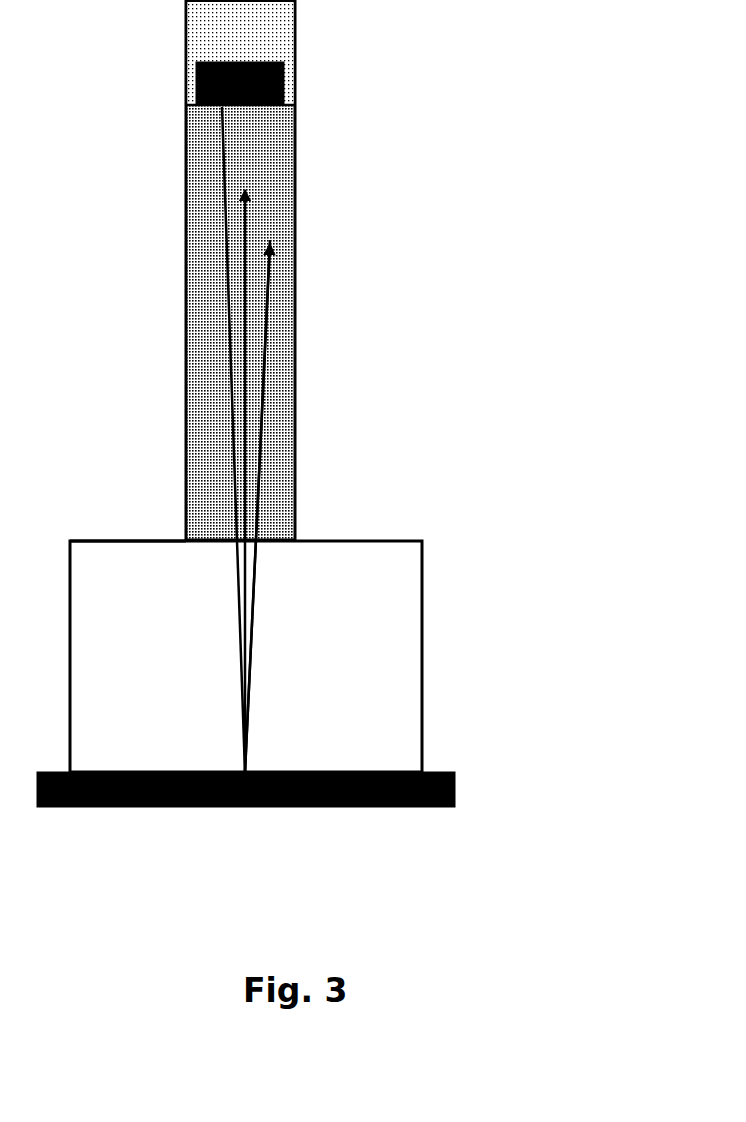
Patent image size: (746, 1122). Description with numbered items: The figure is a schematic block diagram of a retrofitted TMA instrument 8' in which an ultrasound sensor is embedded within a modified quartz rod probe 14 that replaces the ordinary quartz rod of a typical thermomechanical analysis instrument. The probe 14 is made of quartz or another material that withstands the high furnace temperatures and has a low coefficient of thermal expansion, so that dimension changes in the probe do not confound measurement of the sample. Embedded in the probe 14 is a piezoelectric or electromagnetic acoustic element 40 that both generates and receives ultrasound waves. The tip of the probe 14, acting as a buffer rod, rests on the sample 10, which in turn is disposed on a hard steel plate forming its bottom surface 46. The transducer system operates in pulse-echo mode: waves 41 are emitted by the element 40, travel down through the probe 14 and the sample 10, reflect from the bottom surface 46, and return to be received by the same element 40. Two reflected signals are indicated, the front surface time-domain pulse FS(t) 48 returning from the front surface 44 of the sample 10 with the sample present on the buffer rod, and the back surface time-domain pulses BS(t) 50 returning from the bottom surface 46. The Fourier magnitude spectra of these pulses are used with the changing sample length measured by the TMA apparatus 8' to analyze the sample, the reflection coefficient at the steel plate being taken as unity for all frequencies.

The sample 10 is at (368, 550).
The probe 14 is at (187, 337).
The ultrasound element 40 is at (197, 82).
The waves 41 is at (218, 222).
The front surface 44 is at (122, 540).
The bottom surface 46 is at (96, 771).
The time-domain pulse FS(t) 48 is at (253, 186).
The time-domain pulses BS(t) 50 is at (273, 233).
The retrofitted TMA instrument 8' is at (617, 396).